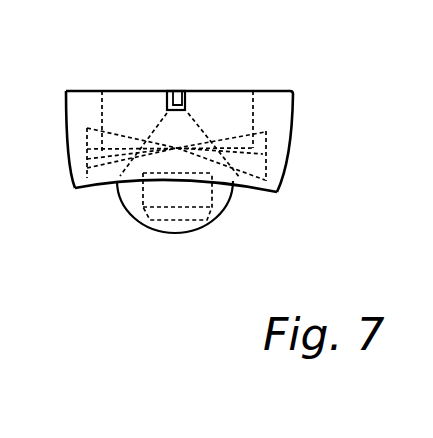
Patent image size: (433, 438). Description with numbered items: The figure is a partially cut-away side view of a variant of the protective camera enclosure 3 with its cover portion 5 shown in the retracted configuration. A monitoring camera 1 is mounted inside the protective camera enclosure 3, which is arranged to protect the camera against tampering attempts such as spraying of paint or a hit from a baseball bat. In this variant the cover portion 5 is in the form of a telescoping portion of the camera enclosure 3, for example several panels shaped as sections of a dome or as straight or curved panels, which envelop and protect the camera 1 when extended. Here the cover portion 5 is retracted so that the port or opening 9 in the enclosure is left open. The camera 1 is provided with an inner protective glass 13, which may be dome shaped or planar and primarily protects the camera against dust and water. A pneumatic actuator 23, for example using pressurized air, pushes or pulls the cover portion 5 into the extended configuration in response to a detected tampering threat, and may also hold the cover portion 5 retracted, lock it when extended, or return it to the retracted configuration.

The monitoring camera 1 is at (145, 202).
The protective camera enclosure 3 is at (287, 109).
The cover portion 5 is at (80, 191).
The opening 9 is at (262, 212).
The inner protective glass 13 is at (193, 236).
The pneumatic actuator 23 is at (177, 92).